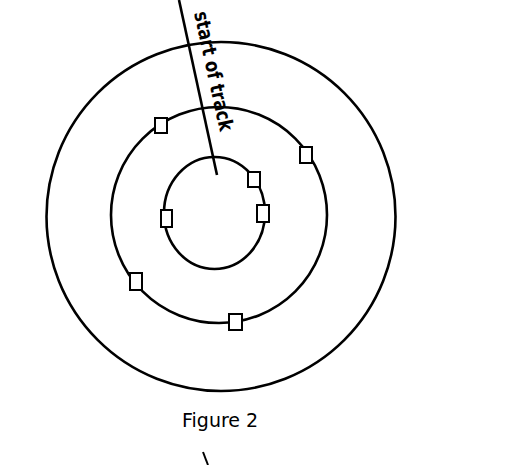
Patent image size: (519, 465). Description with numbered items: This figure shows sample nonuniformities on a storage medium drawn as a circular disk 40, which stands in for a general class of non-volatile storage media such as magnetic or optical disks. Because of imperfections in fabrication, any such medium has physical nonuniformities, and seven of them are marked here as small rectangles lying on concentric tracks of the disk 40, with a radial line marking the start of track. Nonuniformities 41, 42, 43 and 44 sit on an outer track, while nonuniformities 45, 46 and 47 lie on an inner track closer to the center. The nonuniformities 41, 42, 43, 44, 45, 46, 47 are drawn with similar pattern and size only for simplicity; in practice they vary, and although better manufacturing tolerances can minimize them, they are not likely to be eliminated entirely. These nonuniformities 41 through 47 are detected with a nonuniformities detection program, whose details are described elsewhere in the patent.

The disk 40 is at (391, 204).
The nonuniformity 41 is at (151, 114).
The nonuniformity 42 is at (124, 289).
The nonuniformity 43 is at (231, 335).
The nonuniformity 44 is at (325, 155).
The nonuniformity 45 is at (152, 212).
The nonuniformity 46 is at (276, 227).
The nonuniformity 47 is at (268, 167).